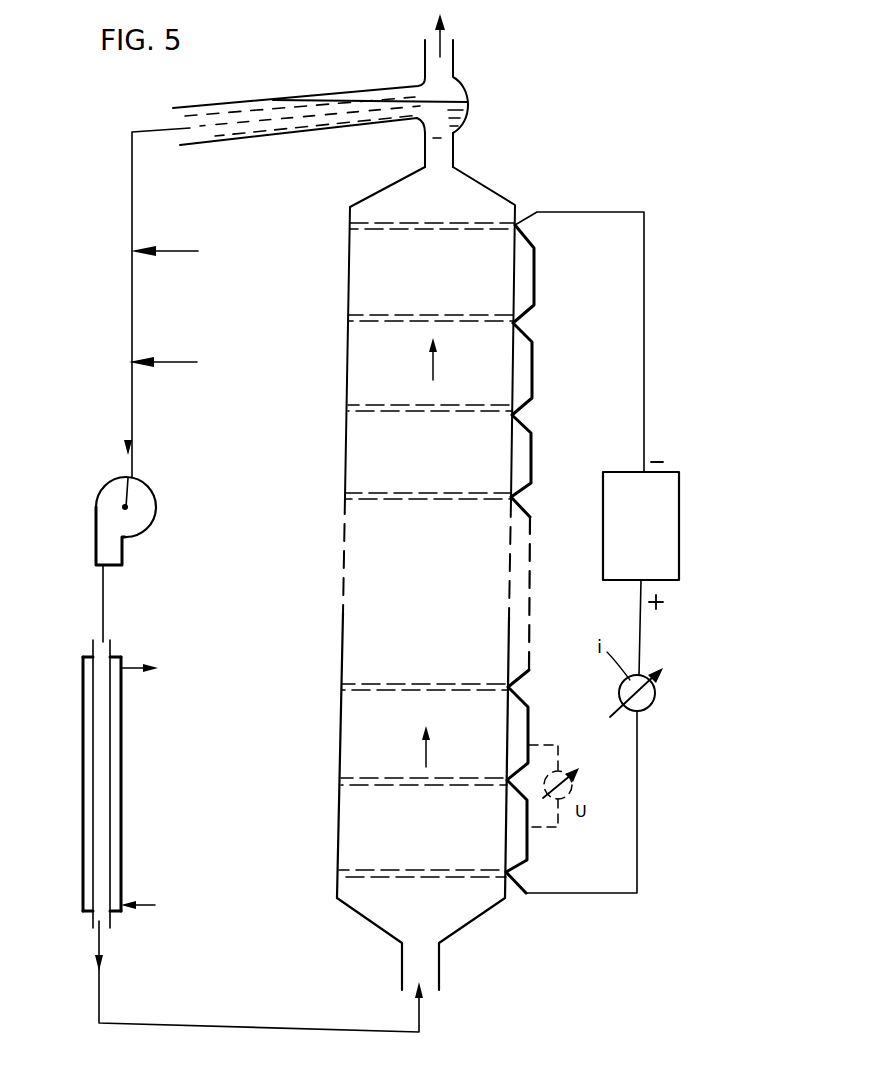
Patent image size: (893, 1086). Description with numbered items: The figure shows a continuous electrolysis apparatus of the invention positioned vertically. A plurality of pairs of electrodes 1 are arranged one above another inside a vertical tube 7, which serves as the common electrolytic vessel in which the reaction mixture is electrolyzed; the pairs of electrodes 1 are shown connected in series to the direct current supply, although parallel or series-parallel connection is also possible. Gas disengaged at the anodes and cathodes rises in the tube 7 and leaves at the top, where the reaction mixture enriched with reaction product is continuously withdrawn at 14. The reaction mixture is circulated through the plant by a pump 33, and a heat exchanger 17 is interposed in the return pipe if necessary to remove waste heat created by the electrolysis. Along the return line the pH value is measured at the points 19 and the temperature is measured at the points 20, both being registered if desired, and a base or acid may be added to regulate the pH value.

The pairs of electrodes 1 is at (377, 777).
The vertical tube 7 is at (348, 445).
The withdrawal point 14 is at (448, 33).
The heat exchanger 17 is at (99, 766).
The pH measuring points 19 is at (173, 250).
The temperature measuring points 20 is at (170, 361).
The pump 33 is at (142, 513).